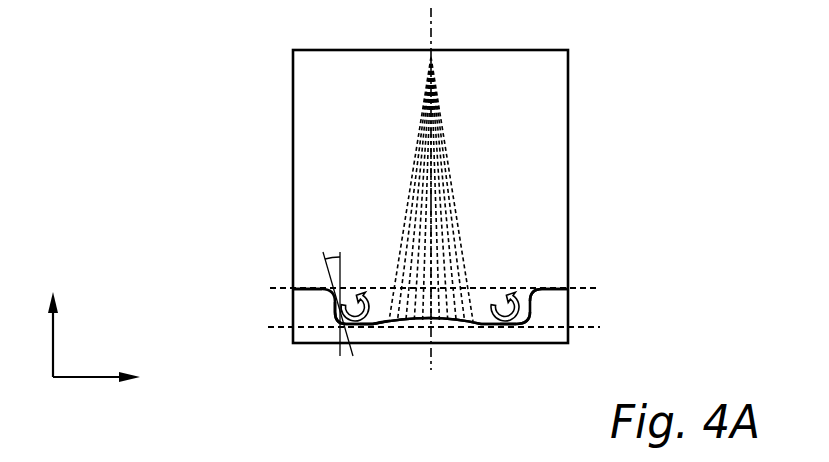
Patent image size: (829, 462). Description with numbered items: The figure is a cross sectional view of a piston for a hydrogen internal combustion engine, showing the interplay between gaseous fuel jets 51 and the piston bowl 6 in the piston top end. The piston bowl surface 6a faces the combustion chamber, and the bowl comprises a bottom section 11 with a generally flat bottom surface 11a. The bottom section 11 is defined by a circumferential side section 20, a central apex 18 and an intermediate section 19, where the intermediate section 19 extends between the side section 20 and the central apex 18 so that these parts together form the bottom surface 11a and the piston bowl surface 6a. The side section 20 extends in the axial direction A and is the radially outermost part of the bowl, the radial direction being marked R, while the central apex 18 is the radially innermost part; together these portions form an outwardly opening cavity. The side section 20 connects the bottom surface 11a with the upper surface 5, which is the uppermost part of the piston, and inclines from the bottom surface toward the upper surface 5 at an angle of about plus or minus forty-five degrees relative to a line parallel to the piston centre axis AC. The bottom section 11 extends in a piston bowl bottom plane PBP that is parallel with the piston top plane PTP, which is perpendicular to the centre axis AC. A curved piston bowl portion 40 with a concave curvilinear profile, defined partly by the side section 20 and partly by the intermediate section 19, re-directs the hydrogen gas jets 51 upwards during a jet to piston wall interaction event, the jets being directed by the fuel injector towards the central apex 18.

The upper surface 5 is at (301, 288).
The piston bowl 6 is at (497, 295).
The piston bowl surface 6a is at (473, 324).
The bottom section 11 is at (408, 172).
The bottom surface 11a is at (377, 322).
The central apex 18 is at (442, 326).
The intermediate section 19 is at (375, 326).
The side section 20 is at (531, 289).
The piston bowl portion 40 is at (524, 327).
The gaseous fuel jet 51 is at (458, 182).
The piston top plane PTP is at (282, 288).
The piston bowl bottom plane PBP is at (280, 327).
The piston centre axis AC is at (432, 34).
The axial direction A is at (51, 320).
The radial direction R is at (107, 377).